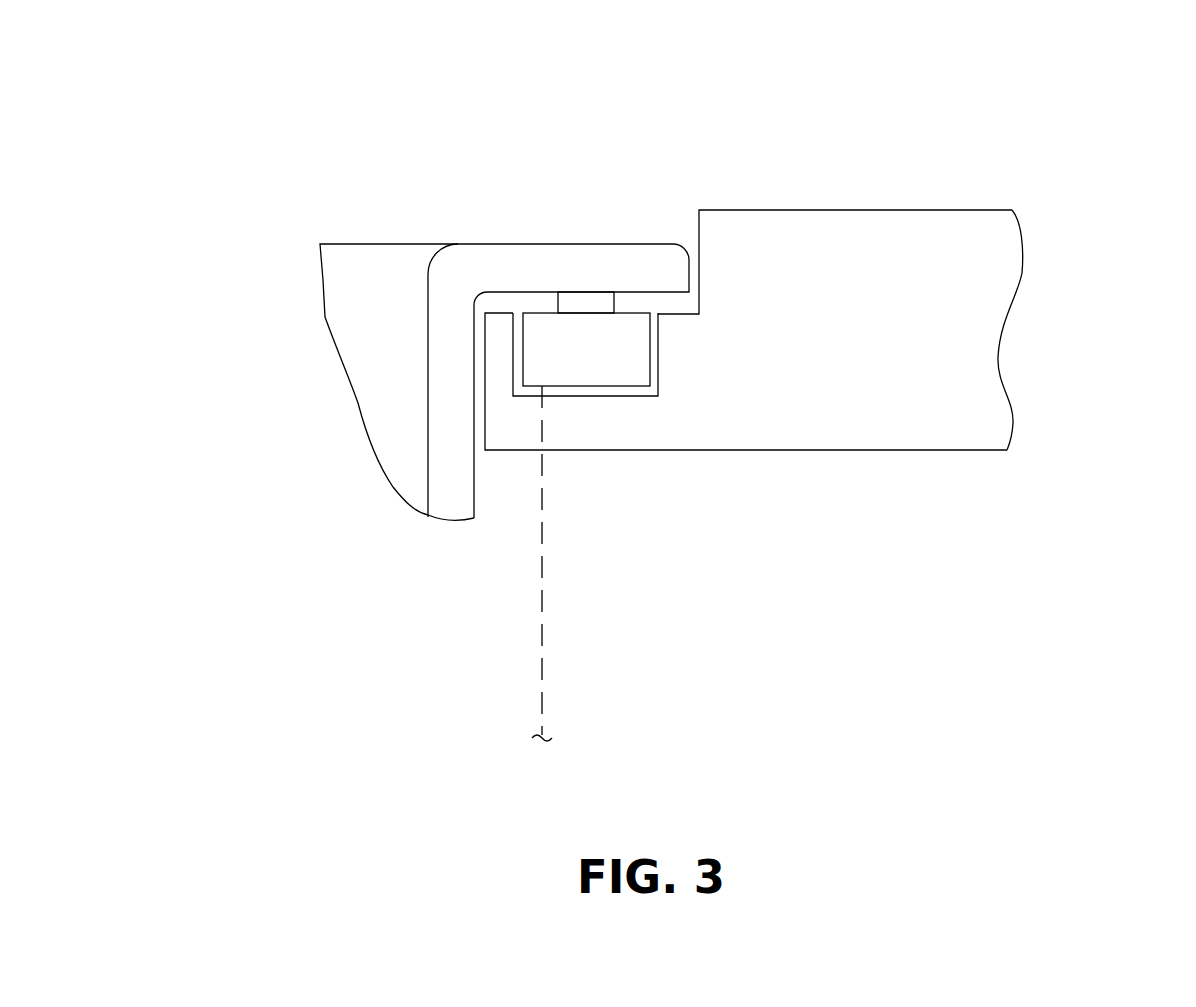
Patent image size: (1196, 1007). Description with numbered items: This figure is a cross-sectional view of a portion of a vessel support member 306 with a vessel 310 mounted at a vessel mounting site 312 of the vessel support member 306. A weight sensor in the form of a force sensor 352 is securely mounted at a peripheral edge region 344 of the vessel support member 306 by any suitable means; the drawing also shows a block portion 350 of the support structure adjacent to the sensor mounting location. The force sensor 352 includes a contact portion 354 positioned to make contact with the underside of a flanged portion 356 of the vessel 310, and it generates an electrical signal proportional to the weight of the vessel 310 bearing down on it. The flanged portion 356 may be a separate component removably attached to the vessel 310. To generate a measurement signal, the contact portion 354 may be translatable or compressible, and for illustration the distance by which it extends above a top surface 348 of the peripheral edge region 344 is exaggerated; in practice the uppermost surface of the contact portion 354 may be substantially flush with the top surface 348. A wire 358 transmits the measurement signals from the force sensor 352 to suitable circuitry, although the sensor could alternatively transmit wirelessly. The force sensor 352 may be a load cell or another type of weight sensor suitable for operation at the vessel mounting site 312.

The vessel support member 306 is at (1095, 243).
The vessel 310 is at (318, 209).
The vessel mounting site 312 is at (668, 78).
The peripheral edge region 344 is at (610, 505).
The top surface 348 is at (687, 315).
The block portion 350 is at (880, 208).
The force sensor 352 is at (648, 367).
The contact portion 354 is at (614, 302).
The flanged portion 356 is at (513, 243).
The wire 358 is at (542, 672).